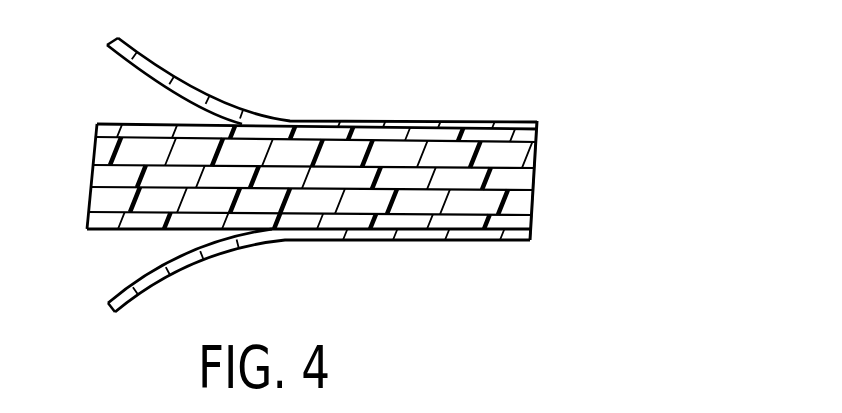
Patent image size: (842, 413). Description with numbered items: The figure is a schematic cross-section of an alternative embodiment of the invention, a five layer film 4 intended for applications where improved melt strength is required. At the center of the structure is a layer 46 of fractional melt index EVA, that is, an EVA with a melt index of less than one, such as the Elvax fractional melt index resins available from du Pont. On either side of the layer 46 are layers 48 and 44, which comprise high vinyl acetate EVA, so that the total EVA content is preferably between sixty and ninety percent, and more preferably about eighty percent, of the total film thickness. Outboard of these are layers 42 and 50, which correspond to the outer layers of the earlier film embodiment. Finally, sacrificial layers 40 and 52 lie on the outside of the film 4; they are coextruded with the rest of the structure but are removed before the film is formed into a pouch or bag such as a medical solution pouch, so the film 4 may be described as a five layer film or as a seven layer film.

The five layer film 4 is at (482, 108).
The sacrificial layer 40 is at (130, 290).
The layer 42 is at (87, 224).
The layer 44 is at (530, 211).
The layer 46 is at (88, 176).
The layer 48 is at (536, 165).
The layer 50 is at (97, 129).
The sacrificial layer 52 is at (118, 57).